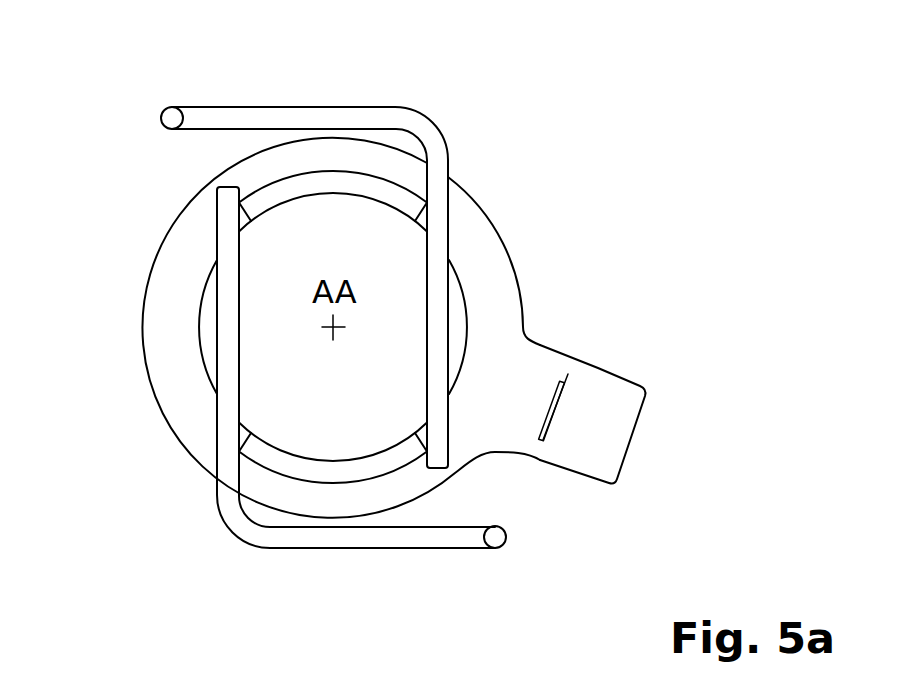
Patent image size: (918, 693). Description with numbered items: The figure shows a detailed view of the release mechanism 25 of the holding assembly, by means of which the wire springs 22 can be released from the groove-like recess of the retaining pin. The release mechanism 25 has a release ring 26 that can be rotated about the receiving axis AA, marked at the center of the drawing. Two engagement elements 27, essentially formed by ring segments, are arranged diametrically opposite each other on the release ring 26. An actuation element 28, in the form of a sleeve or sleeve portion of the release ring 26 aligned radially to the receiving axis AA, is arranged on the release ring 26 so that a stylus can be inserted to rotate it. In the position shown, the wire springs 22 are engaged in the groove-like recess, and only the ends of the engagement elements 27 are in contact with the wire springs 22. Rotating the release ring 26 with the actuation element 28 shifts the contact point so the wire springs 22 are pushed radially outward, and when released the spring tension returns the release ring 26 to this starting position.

The wire spring 22 is at (275, 118).
The release mechanism 25 is at (530, 292).
The release ring 26 is at (177, 327).
The engagement element 27 is at (268, 453).
The actuation element 28 is at (603, 417).